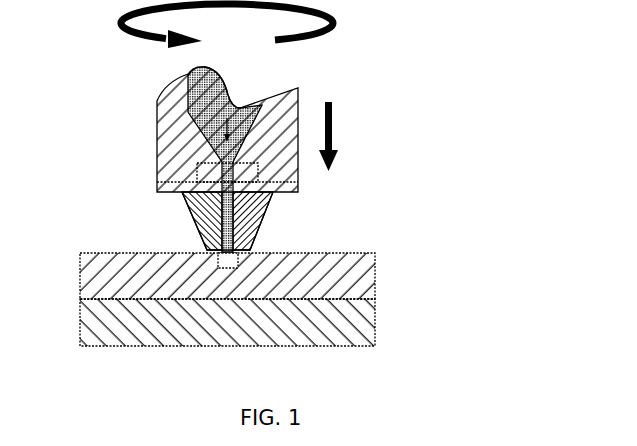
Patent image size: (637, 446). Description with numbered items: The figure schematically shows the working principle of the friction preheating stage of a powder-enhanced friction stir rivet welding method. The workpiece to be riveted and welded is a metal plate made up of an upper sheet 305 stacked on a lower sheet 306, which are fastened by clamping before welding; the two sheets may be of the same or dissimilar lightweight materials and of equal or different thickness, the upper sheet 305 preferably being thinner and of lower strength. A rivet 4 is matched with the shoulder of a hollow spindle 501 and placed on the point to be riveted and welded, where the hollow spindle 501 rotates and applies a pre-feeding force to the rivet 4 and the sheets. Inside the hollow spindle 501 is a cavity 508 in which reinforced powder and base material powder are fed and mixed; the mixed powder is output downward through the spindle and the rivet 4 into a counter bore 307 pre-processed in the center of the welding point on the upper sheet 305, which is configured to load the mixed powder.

The hollow spindle 501 is at (168, 140).
The cavity of the hollow spindle 508 is at (243, 120).
The rivet 4 is at (208, 222).
The counter bore 307 is at (228, 262).
The upper sheet 305 is at (352, 282).
The lower sheet 306 is at (357, 332).